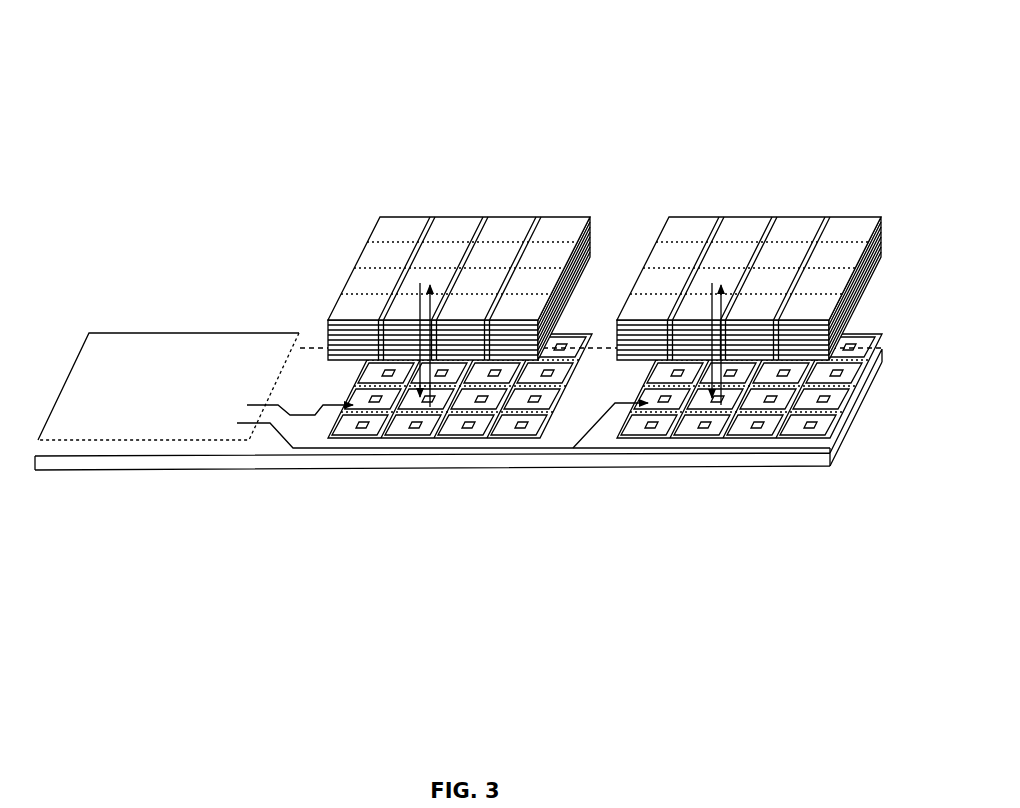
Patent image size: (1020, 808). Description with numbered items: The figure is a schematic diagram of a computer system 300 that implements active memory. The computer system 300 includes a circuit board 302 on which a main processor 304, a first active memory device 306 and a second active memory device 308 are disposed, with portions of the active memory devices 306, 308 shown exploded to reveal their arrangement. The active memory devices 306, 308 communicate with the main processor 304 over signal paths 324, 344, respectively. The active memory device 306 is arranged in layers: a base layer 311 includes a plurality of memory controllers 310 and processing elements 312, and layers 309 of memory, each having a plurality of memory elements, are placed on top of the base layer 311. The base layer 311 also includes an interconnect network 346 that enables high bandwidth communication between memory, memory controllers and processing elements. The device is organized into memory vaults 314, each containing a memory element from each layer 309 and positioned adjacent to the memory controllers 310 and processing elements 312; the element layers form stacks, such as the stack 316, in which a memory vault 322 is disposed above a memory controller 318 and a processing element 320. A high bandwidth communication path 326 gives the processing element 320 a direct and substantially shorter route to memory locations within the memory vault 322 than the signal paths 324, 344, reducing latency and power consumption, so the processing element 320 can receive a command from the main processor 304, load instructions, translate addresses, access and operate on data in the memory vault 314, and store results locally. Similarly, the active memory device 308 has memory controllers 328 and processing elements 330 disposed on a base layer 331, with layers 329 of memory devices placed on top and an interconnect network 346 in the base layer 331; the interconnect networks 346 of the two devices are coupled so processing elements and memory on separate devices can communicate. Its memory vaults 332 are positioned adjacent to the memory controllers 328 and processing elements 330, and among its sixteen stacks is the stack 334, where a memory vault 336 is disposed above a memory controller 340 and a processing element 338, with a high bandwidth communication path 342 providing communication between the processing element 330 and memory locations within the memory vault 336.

The computer system 300 is at (355, 78).
The circuit board 302 is at (190, 465).
The main processor 304 is at (168, 386).
The active memory device 306 is at (507, 213).
The active memory device 308 is at (735, 215).
The layers 309 is at (323, 322).
The memory controllers 310 is at (467, 428).
The base layer 311 is at (445, 440).
The processing elements 312 is at (533, 425).
The memory vaults 314 is at (563, 253).
The stack 316 is at (397, 283).
The memory controller 318 is at (425, 403).
The processing element 320 is at (435, 405).
The memory vault 322 is at (408, 277).
The signal path 324 is at (323, 407).
The high bandwidth communication path 326 is at (417, 303).
The memory controllers 328 is at (748, 427).
The layers 329 is at (878, 215).
The processing elements 330 is at (815, 425).
The base layer 331 is at (728, 438).
The memory vaults 332 is at (852, 228).
The stack 334 is at (723, 273).
The memory vault 336 is at (707, 295).
The processing element 338 is at (722, 403).
The memory controller 340 is at (712, 402).
The high bandwidth communication path 342 is at (705, 298).
The signal path 344 is at (303, 447).
The interconnect network 346 is at (653, 437).